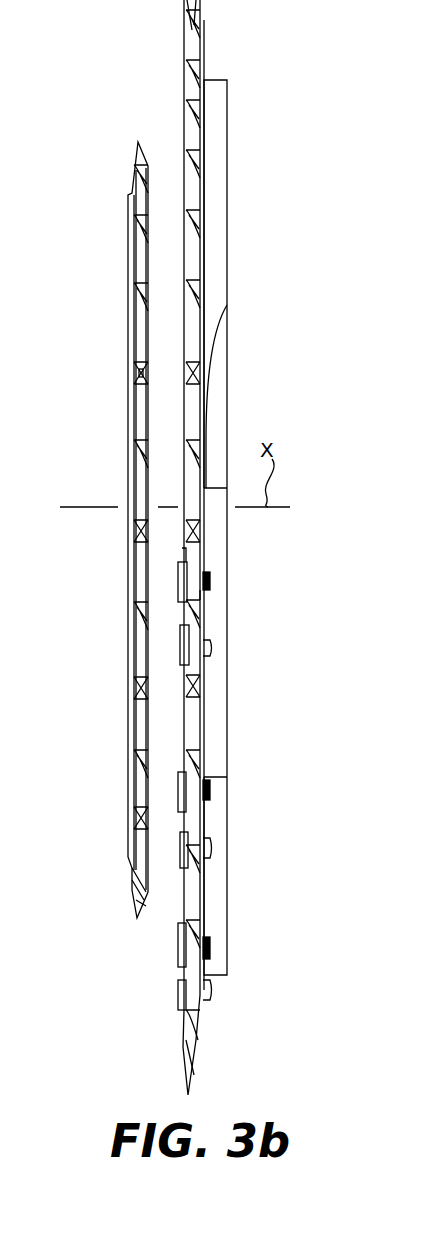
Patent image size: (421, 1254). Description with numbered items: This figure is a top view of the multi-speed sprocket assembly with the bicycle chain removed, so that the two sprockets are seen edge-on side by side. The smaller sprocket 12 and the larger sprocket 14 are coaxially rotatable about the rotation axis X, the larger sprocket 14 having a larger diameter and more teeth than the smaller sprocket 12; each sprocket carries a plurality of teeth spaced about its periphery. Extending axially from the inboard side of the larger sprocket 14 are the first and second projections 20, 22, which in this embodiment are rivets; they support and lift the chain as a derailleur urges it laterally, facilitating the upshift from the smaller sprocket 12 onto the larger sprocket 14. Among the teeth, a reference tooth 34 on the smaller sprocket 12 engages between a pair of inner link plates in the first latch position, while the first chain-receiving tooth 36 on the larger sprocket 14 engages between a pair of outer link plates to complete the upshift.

The smaller sprocket 12 is at (108, 530).
The larger sprocket 14 is at (209, 547).
The first projection 20 is at (186, 580).
The second projection 22 is at (188, 645).
The reference tooth 34 is at (140, 378).
The first chain-receiving tooth 36 is at (196, 702).